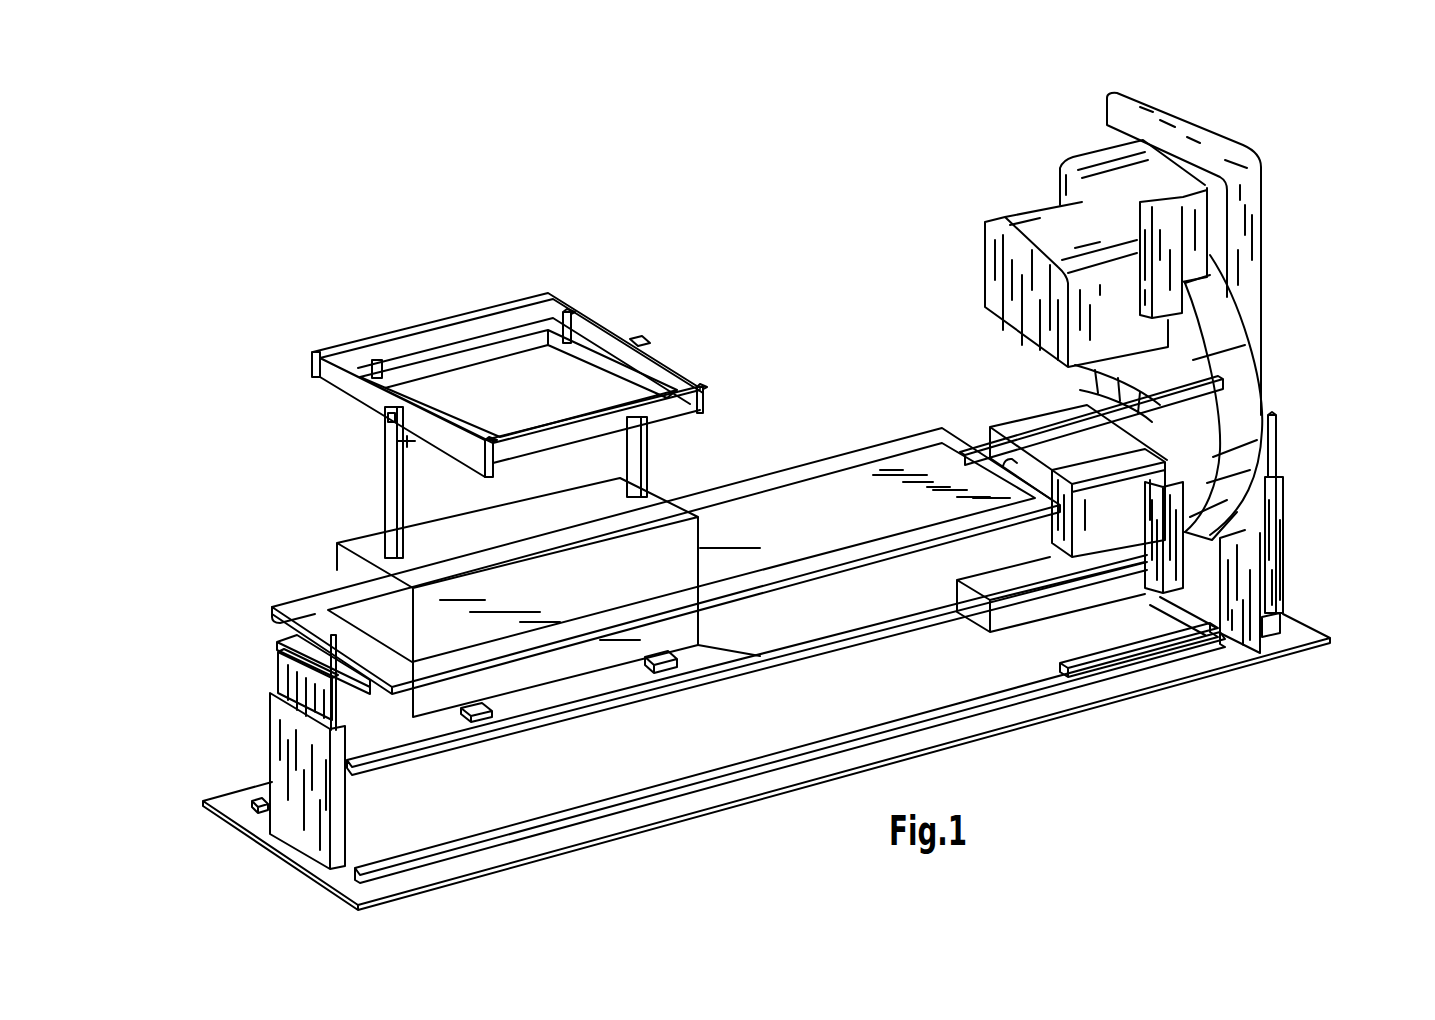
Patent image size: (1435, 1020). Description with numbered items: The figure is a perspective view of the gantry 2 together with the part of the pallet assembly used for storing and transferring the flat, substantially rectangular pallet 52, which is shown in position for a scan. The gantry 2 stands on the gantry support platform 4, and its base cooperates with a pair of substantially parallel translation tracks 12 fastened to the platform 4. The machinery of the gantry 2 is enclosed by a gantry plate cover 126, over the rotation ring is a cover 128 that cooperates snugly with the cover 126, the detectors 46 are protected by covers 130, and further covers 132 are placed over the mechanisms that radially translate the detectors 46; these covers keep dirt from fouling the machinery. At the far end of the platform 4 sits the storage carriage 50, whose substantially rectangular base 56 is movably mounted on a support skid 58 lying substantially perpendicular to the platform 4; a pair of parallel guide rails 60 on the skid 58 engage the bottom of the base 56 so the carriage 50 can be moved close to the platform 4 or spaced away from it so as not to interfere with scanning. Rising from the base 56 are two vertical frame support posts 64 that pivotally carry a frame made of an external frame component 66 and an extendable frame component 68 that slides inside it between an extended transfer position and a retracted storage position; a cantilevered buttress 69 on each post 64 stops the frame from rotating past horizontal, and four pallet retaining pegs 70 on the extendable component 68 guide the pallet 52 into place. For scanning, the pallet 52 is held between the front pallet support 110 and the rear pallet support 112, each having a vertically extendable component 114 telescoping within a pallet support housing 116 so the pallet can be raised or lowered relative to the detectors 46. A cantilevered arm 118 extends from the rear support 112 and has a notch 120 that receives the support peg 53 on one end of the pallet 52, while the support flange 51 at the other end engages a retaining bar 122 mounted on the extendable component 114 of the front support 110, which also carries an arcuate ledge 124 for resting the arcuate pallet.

The gantry 2 is at (1307, 137).
The gantry support platform 4 is at (777, 715).
The translation tracks 12 is at (547, 822).
The detectors 46 is at (1020, 332).
The storage carriage 50 is at (189, 486).
The support flange 51 is at (275, 645).
The pallet 52 is at (826, 508).
The support peg 53 is at (1006, 466).
The base 56 is at (343, 572).
The support skid 58 is at (717, 652).
The guide rails 60 is at (668, 675).
The vertical frame support posts 64 is at (640, 450).
The external frame component 66 is at (438, 333).
The extendable frame component 68 is at (587, 420).
The cantilevered buttress 69 is at (400, 442).
The pallet retaining pegs 70 is at (570, 312).
The front pallet support 110 is at (284, 696).
The rear pallet support 112 is at (1305, 509).
The vertically extendable component 114 is at (300, 680).
The pallet support housing 116 is at (308, 810).
The cantilevered arm 118 is at (1148, 420).
The notch 120 is at (988, 425).
The retaining bar 122 is at (283, 608).
The arcuate ledge 124 is at (345, 690).
The gantry plate cover 126 is at (1190, 125).
The cover 128 is at (1240, 377).
The covers 130 is at (1043, 223).
The covers 132 is at (1093, 153).